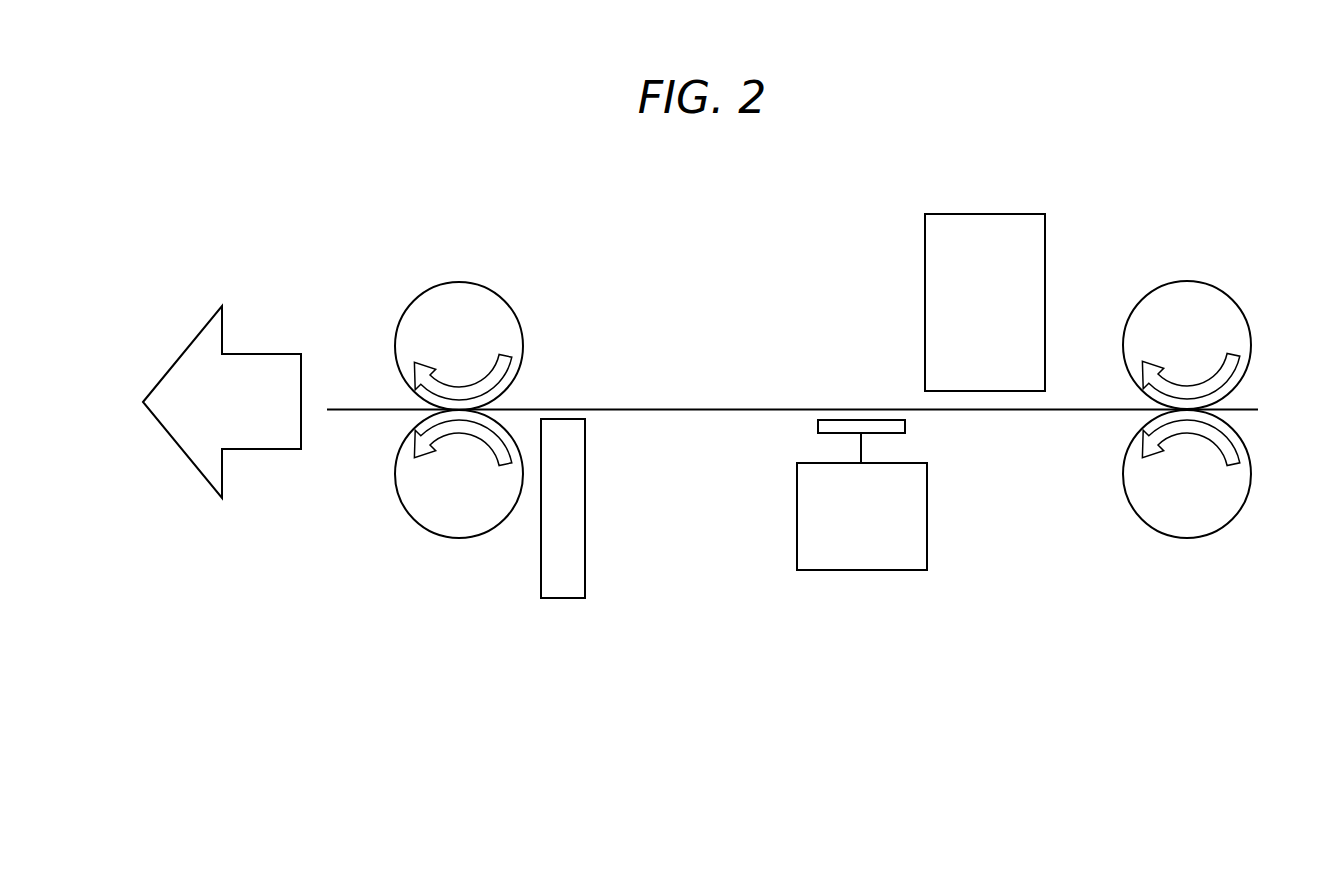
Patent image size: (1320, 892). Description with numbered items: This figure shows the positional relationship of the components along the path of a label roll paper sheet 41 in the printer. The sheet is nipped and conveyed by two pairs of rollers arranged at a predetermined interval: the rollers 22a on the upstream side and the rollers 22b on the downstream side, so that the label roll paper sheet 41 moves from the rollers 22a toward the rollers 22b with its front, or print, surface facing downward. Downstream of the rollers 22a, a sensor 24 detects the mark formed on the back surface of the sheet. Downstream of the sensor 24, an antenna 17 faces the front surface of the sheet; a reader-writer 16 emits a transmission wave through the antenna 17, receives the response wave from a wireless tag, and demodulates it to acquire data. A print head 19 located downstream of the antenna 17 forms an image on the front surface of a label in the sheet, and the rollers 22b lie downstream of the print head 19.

The reader-writer 16 is at (863, 570).
The antenna 17 is at (818, 427).
The print head 19 is at (564, 598).
The rollers 22a is at (1185, 283).
The rollers 22b is at (457, 282).
The sensor 24 is at (988, 214).
The label roll paper sheet 41 is at (688, 409).